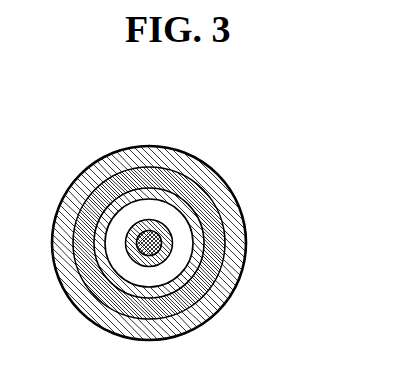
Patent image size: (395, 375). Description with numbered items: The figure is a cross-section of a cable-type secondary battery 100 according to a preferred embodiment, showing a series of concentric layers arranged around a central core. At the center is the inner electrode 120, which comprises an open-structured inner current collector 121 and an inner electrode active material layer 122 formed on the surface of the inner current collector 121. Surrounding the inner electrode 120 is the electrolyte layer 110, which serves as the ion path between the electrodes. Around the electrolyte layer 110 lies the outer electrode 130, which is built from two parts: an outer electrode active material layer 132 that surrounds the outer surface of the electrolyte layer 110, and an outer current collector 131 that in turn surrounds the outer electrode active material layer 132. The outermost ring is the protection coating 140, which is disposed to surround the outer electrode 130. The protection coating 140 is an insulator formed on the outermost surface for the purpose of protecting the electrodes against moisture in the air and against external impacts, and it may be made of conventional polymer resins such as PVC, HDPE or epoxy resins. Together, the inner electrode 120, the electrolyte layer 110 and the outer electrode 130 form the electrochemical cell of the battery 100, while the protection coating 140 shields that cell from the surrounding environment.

The cable-type secondary battery 100 is at (181, 220).
The electrolyte layer 110 is at (147, 202).
The inner electrode 120 is at (167, 184).
The inner current collector 121 is at (156, 234).
The inner electrode active material layer 122 is at (154, 226).
The outer electrode 130 is at (191, 243).
The outer current collector 131 is at (224, 250).
The outer electrode active material layer 132 is at (215, 236).
The protection coating 140 is at (222, 187).